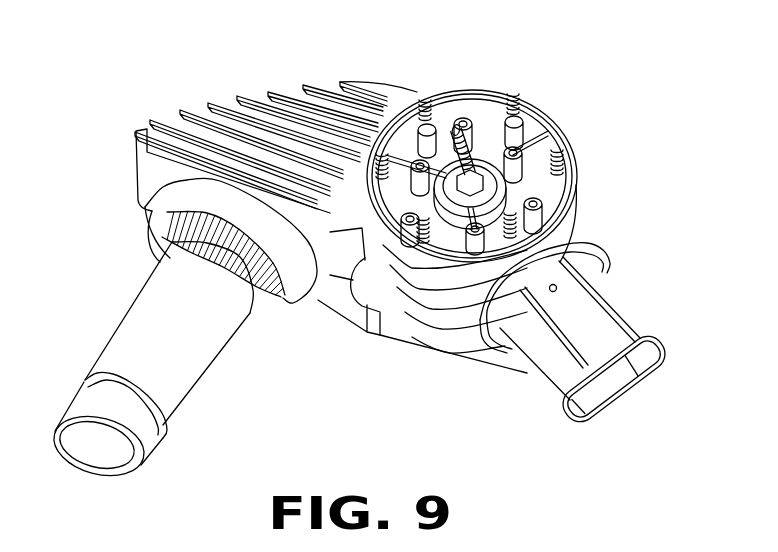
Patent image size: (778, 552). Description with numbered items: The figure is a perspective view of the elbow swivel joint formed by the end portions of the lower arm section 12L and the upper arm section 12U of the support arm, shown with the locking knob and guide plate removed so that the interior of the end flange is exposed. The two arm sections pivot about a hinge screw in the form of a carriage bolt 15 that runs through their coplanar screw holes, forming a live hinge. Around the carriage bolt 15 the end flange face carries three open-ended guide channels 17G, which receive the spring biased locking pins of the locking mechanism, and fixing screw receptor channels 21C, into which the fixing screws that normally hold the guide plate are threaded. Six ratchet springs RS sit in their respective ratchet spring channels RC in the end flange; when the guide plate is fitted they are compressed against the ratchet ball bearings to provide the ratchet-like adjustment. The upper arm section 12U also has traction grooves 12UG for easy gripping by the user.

The traction grooves 12UG is at (185, 114).
The ratchet spring channel RC is at (412, 115).
The ratchet springs RS is at (424, 100).
The open-ended guide channels 17G is at (463, 118).
The carriage bolt 15 is at (470, 142).
The fixing screw receptor channels 21C is at (560, 160).
The upper arm section 12U is at (200, 358).
The lower arm section 12L is at (610, 337).